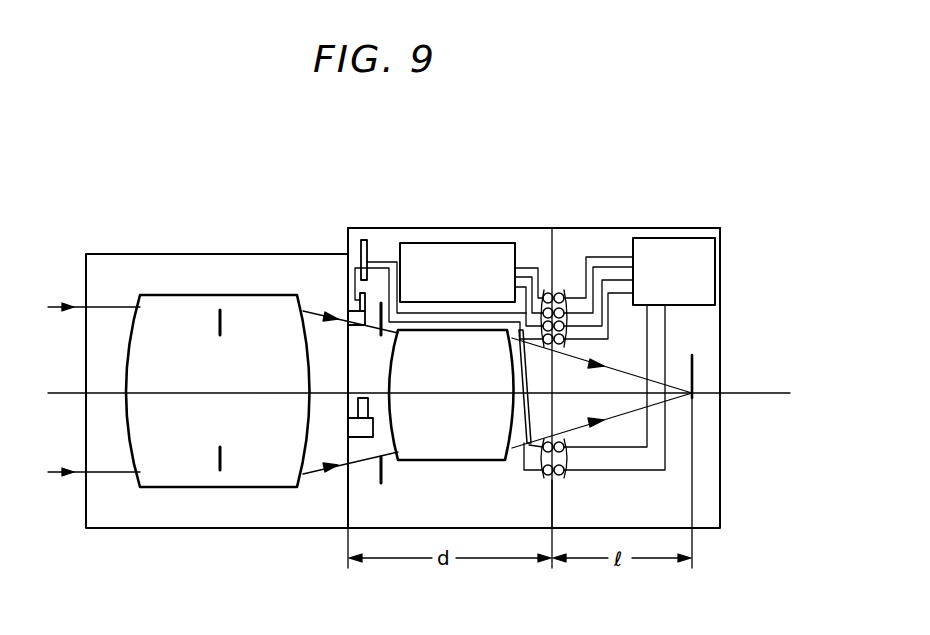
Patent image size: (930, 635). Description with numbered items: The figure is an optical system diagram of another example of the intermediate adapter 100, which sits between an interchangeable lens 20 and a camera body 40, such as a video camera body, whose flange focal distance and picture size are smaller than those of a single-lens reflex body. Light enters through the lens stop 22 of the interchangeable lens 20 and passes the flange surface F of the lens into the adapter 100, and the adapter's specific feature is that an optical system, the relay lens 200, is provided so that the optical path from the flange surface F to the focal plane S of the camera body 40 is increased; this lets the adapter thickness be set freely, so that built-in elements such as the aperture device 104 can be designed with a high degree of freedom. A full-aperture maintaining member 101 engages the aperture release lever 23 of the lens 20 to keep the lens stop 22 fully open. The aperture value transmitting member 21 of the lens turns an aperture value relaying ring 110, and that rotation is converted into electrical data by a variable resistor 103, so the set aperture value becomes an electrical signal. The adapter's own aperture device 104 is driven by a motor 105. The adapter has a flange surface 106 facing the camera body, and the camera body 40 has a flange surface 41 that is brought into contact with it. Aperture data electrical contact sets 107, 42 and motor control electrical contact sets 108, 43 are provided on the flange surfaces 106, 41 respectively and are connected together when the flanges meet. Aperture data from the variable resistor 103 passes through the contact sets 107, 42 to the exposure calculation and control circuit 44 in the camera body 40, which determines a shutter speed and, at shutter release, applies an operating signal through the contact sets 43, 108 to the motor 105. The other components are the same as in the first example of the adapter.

The interchangeable lens 20 is at (214, 250).
The lens stop 22 is at (217, 463).
The aperture value transmitting member 21 is at (347, 318).
The aperture release lever 23 is at (352, 428).
The full-aperture maintaining member 101 is at (352, 405).
The variable resistor 103 is at (363, 240).
The aperture device 104 is at (380, 474).
The aperture value relaying ring 110 is at (352, 283).
The flange surface of the interchangeable lens F is at (350, 510).
The intermediate adapter 100 is at (456, 215).
The motor 105 is at (490, 243).
The motor control electrical contact set 108 is at (510, 332).
The aperture data electrical contact set 107 is at (524, 462).
The flange surface 106 is at (553, 510).
The flange surface 41 is at (550, 500).
The relay lens 200 is at (446, 455).
The camera body 40 is at (718, 222).
The aperture data electrical contact set 42 is at (568, 457).
The motor control electrical contact set 43 is at (568, 320).
The exposure calculation and control circuit 44 is at (660, 238).
The focal plane S is at (692, 365).